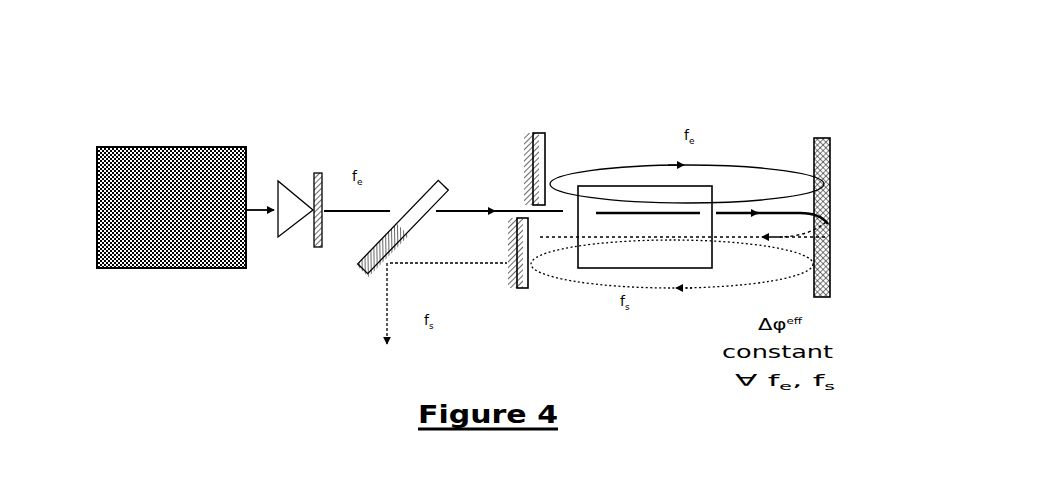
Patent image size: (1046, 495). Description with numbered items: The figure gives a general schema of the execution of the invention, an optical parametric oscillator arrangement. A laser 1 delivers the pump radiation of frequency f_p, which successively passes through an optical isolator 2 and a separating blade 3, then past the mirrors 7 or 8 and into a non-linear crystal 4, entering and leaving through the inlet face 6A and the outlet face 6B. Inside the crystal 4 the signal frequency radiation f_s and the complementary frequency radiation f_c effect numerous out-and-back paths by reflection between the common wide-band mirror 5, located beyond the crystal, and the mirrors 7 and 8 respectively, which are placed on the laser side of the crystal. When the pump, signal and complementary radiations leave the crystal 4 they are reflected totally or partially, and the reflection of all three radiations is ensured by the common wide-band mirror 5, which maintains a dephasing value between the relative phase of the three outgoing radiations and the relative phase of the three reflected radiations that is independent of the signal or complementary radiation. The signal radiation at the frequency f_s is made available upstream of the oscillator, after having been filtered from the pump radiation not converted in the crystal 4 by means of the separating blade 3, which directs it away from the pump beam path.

The laser 1 is at (197, 147).
The optical isolator 2 is at (298, 182).
The separating blade 3 is at (425, 183).
The non-linear crystal 4 is at (643, 186).
The common wide-band mirror 5 is at (823, 137).
The inlet face 6A is at (577, 187).
The outlet face 6B is at (713, 187).
The mirror 7 is at (522, 291).
The mirror 8 is at (533, 133).